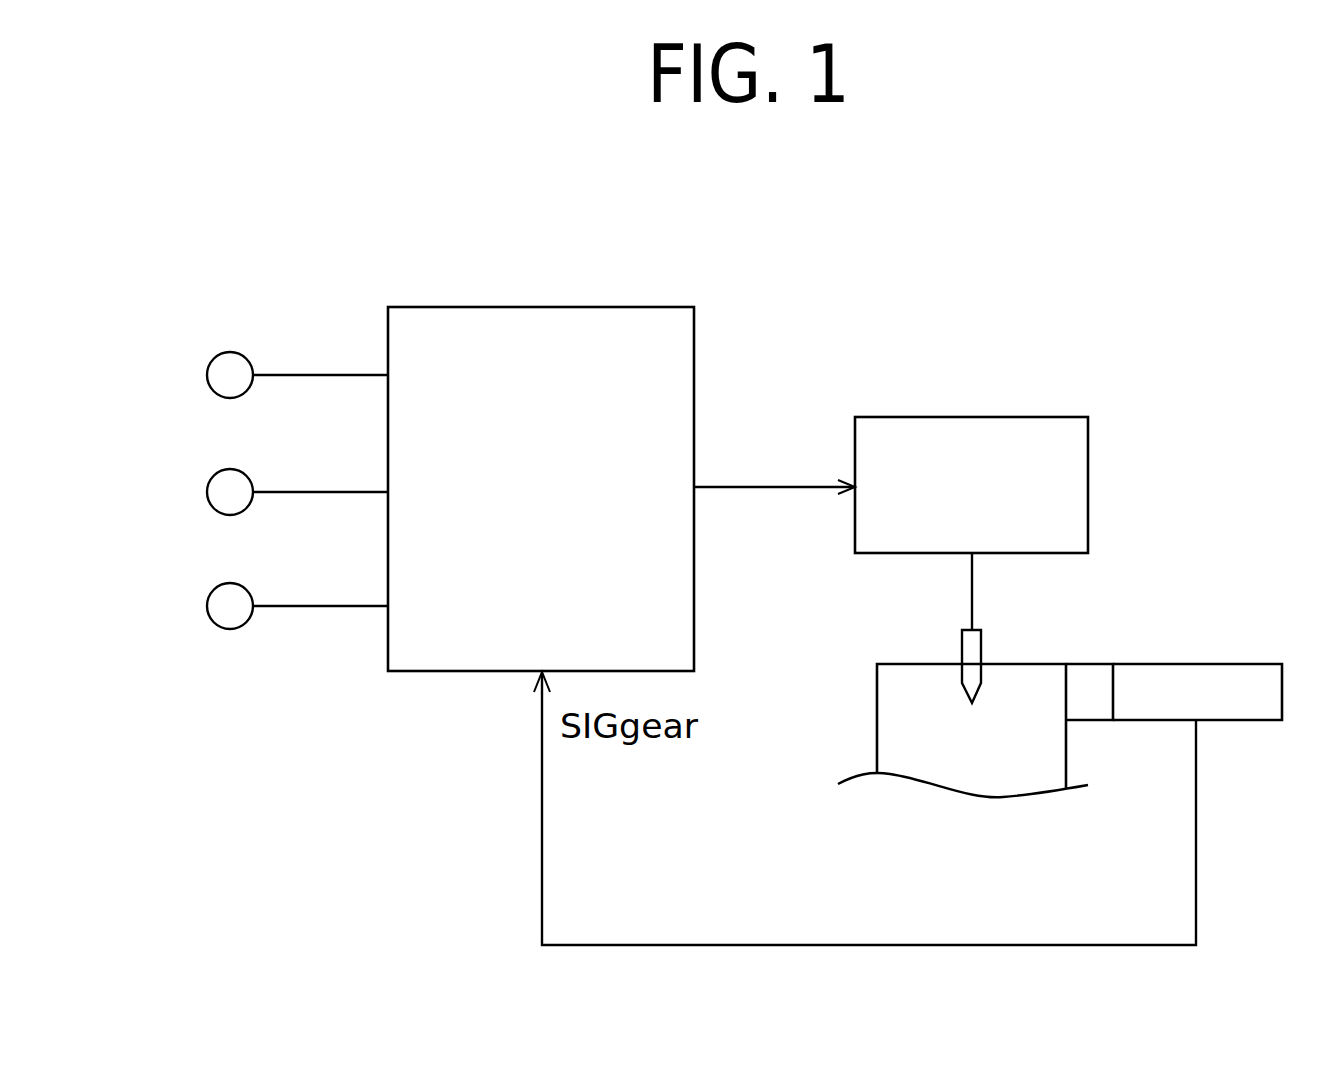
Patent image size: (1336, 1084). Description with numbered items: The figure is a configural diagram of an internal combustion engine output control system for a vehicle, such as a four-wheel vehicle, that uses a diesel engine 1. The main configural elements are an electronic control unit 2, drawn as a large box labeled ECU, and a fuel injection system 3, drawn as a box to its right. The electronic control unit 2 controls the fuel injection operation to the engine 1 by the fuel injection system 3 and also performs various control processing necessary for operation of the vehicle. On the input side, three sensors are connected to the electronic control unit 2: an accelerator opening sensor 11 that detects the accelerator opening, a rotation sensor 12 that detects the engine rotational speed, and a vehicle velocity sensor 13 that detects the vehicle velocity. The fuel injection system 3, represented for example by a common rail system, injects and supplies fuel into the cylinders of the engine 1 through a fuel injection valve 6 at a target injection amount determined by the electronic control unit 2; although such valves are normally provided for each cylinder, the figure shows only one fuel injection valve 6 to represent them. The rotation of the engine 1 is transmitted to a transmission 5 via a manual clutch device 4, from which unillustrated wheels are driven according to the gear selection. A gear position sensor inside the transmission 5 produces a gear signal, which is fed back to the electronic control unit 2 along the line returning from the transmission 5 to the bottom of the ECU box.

The engine 1 is at (902, 703).
The electronic control unit 2 is at (473, 325).
The fuel injection system 3 is at (932, 438).
The manual clutch device 4 is at (1090, 675).
The transmission 5 is at (1193, 673).
The fuel injection valve 6 is at (968, 647).
The accelerator opening sensor 11 is at (215, 378).
The rotation sensor 12 is at (215, 492).
The vehicle velocity sensor 13 is at (215, 613).